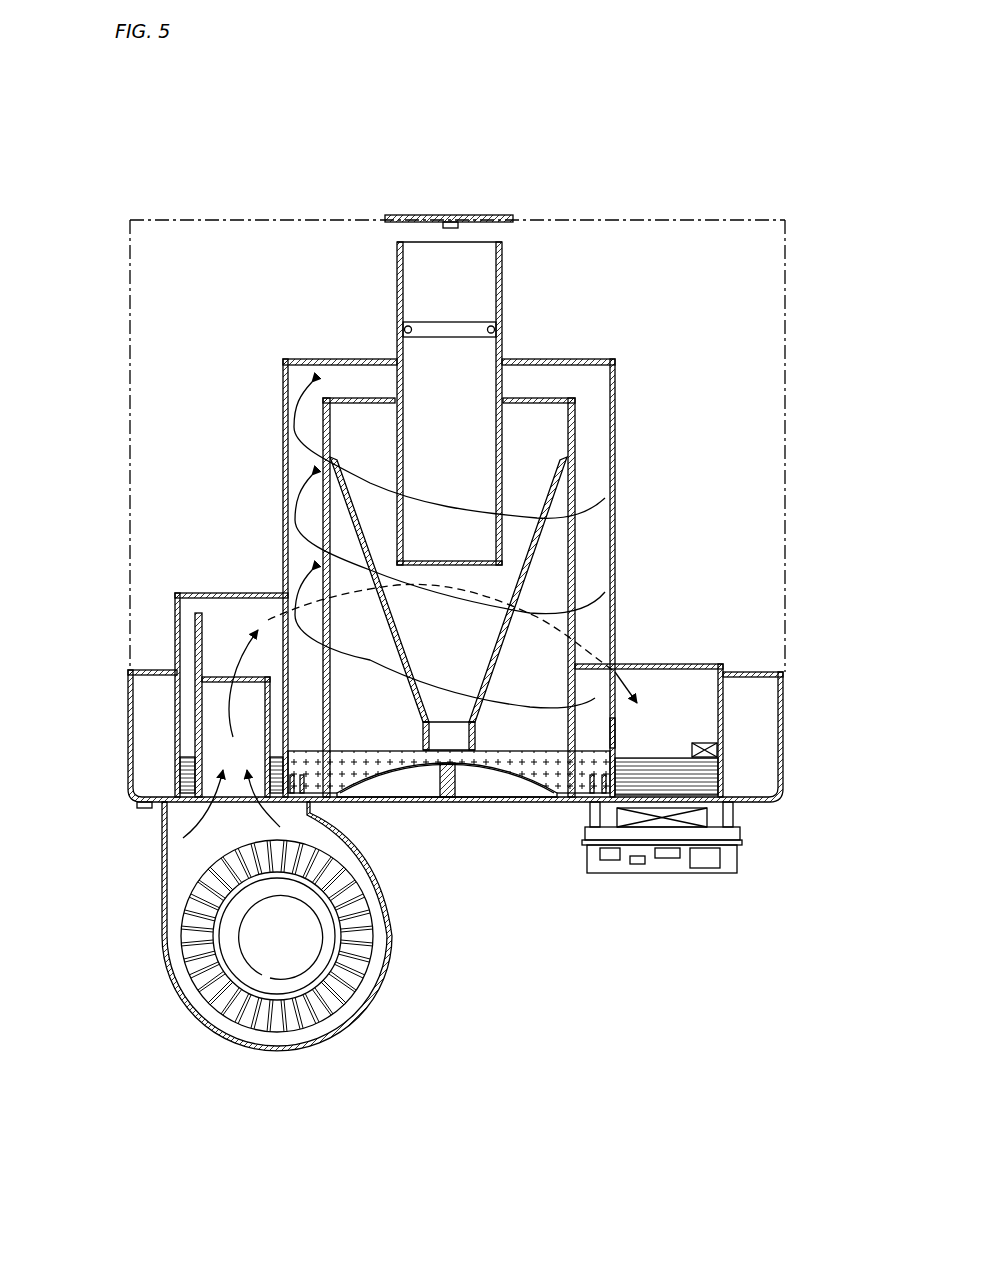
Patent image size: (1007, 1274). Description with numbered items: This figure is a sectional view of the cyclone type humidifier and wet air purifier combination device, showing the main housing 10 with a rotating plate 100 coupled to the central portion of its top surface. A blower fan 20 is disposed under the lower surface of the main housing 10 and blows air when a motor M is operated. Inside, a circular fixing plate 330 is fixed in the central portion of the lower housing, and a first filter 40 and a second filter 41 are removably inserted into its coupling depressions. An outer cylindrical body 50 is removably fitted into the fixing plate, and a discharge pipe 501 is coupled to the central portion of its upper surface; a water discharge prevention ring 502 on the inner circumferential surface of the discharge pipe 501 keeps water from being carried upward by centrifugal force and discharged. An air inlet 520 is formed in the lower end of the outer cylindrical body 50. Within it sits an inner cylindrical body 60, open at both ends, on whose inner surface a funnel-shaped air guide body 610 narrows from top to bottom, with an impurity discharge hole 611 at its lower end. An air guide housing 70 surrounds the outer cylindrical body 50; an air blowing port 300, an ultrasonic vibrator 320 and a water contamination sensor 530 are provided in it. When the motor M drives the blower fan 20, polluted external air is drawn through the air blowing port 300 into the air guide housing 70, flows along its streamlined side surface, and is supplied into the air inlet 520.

The main housing 10 is at (228, 220).
The blower fan 20 is at (228, 951).
The motor M is at (272, 947).
The first filter 40 is at (493, 762).
The second filter 41 is at (585, 797).
The outer cylindrical body 50 is at (592, 357).
The inner cylindrical body 60 is at (578, 418).
The air guide housing 70 is at (717, 686).
The rotating plate 100 is at (491, 326).
The air blowing port 300 is at (220, 718).
The ultrasonic vibrator 320 is at (663, 860).
The circular fixing plate 330 is at (540, 775).
The discharge pipe 501 is at (503, 265).
The water discharge prevention ring 502 is at (397, 325).
The air inlet 520 is at (615, 732).
The water contamination sensor 530 is at (692, 752).
The air guide body 610 is at (411, 685).
The impurity discharge hole 611 is at (450, 740).